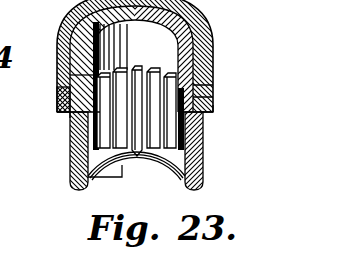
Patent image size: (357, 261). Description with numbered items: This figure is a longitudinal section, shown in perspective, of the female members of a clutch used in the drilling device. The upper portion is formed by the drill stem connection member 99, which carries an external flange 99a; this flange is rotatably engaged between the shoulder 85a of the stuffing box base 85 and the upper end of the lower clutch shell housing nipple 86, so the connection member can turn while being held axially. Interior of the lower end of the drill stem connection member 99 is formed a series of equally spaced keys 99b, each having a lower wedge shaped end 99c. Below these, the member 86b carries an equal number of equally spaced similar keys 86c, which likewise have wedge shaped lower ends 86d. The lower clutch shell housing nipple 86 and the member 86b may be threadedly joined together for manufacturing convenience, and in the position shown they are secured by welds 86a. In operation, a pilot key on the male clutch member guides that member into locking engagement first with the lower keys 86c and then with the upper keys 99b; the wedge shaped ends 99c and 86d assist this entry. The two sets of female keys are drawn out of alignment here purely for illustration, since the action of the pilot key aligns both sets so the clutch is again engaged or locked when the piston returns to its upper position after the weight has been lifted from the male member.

The stuffing box base 85 is at (213, 71).
The shoulder 85a is at (203, 50).
The lower clutch shell housing nipple 86 is at (203, 174).
The welds 86a is at (70, 140).
The member carrying lower keys 86b is at (203, 153).
The keys 86c is at (62, 115).
The wedge shaped lower ends 86d is at (70, 175).
The drill stem connection member 99 is at (90, 47).
The external flange 99a is at (70, 75).
The keys 99b is at (213, 91).
The wedge shaped ends 99c is at (213, 108).